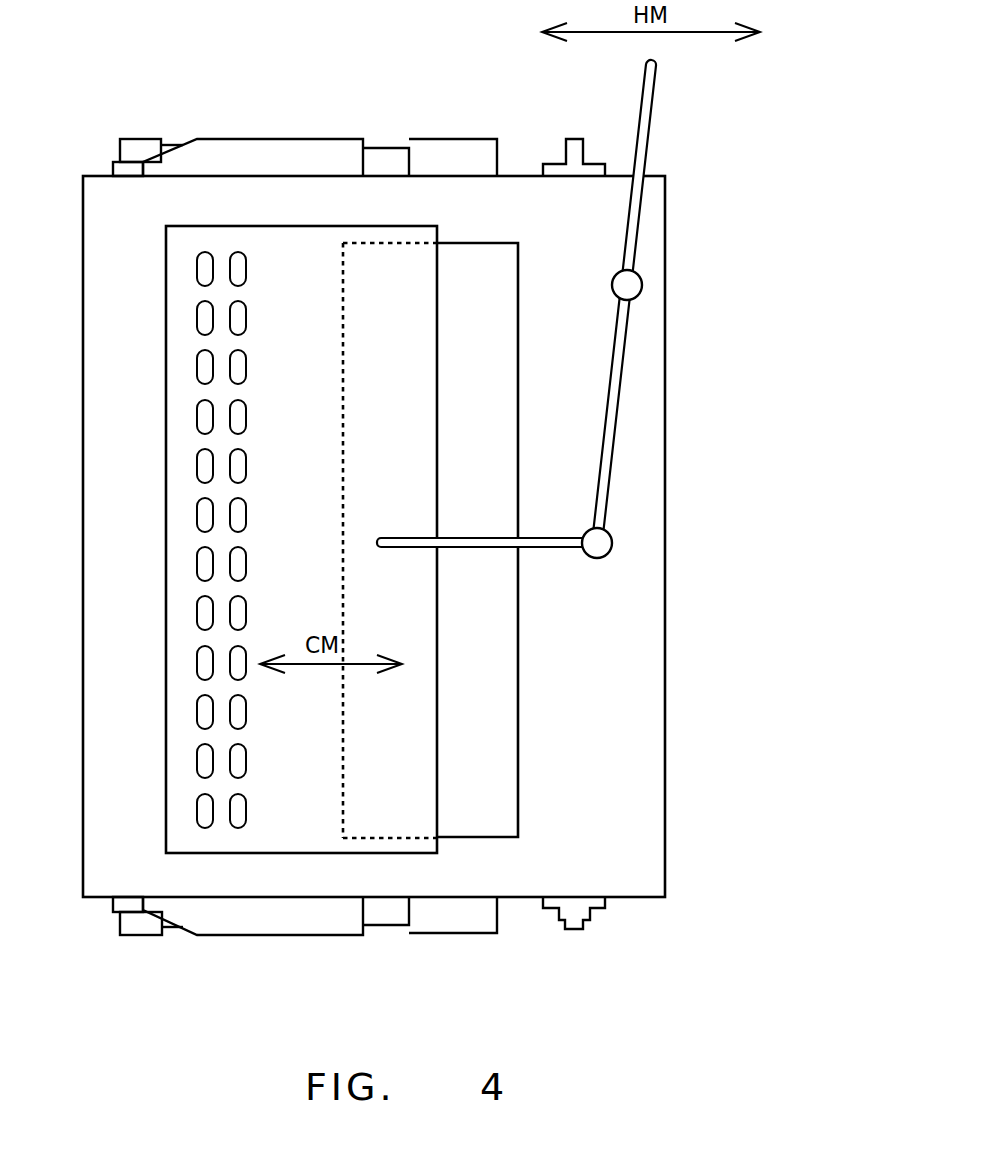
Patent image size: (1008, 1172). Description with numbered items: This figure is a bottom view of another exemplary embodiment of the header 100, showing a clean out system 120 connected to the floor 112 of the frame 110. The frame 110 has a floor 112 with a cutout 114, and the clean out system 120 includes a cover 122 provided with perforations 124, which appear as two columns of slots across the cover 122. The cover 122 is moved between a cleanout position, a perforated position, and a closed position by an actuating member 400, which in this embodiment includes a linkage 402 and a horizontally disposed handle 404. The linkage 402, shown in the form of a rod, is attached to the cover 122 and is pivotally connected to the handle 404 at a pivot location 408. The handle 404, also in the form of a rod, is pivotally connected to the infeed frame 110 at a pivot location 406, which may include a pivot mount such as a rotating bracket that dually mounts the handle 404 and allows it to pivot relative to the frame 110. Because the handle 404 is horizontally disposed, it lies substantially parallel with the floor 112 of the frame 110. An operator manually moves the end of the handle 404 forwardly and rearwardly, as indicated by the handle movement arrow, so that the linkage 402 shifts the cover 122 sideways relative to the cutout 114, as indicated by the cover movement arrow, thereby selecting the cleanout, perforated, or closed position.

The header 100 is at (297, 117).
The frame 110 is at (665, 748).
The floor 112 is at (627, 795).
The cutout 114 is at (516, 690).
The clean out system 120 is at (392, 855).
The cover 122 is at (283, 853).
The perforations 124 is at (238, 829).
The actuating member 400 is at (747, 140).
The linkage 402 is at (502, 547).
The handle 404 is at (641, 107).
The pivot location 406 is at (627, 285).
The pivot location 408 is at (597, 543).